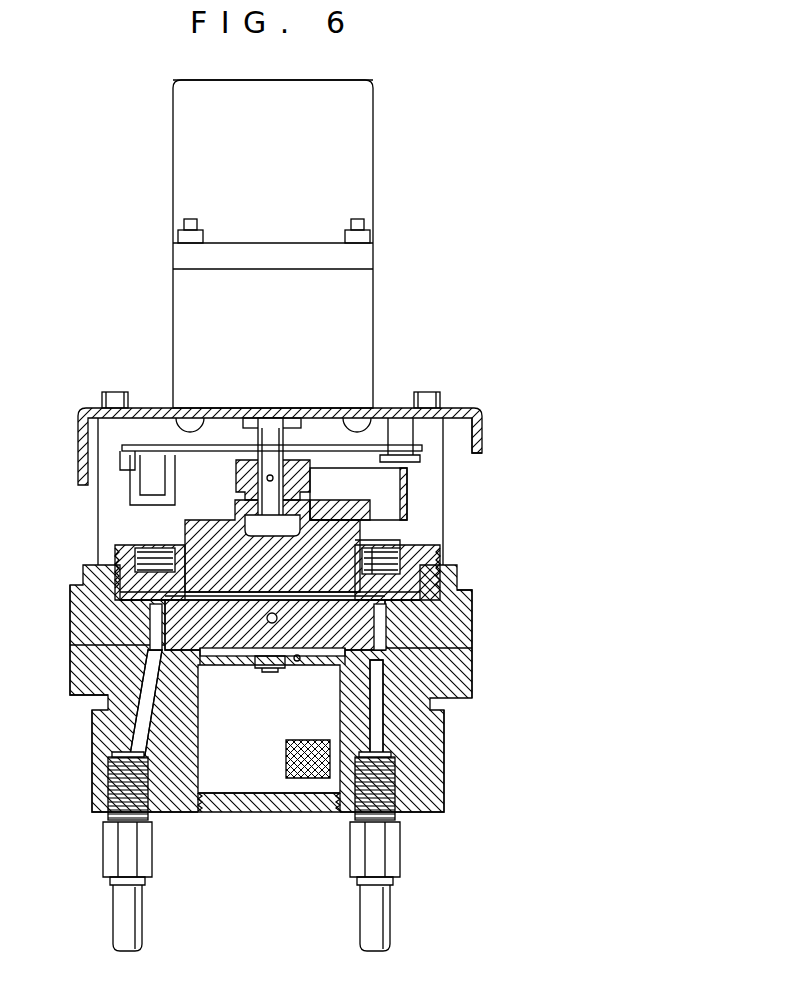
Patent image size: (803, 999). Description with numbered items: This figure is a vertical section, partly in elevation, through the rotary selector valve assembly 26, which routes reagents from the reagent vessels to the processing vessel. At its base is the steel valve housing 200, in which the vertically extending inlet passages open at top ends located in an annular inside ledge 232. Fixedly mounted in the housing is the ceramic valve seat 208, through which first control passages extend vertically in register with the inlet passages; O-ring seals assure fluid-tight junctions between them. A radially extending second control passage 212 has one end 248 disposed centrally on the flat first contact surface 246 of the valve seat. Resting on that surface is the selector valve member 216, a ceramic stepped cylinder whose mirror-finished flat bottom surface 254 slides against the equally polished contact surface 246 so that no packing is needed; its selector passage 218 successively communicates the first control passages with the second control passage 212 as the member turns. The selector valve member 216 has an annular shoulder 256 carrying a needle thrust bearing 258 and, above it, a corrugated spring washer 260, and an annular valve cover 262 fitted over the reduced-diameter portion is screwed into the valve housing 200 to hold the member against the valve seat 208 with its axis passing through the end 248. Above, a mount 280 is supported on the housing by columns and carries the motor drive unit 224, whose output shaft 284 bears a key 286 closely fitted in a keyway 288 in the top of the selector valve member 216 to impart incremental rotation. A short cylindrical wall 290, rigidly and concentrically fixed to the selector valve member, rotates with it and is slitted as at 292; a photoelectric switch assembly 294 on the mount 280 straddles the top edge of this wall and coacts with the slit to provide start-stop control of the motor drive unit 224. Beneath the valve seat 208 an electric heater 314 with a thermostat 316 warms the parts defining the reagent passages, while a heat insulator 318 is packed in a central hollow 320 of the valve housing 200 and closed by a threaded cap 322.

The rotary selector valve assembly 26 is at (453, 200).
The valve housing 200 is at (465, 608).
The valve seat 208 is at (420, 648).
The second control passage 212 is at (262, 657).
The selector valve member 216 is at (332, 514).
The selector passage 218 is at (322, 592).
The motor drive unit 224 is at (287, 311).
The annular inside ledge 232 is at (110, 655).
The first contact surface 246 is at (248, 592).
The end of the second control passage 248 is at (265, 612).
The flat bottom surface 254 is at (188, 598).
The annular shoulder 256 is at (130, 562).
The needle thrust bearing 258 is at (430, 566).
The corrugated spring washer 260 is at (398, 555).
The annular valve cover 262 is at (385, 540).
The mount 280 is at (393, 407).
The output shaft 284 is at (266, 425).
The key 286 is at (238, 505).
The keyway 288 is at (300, 515).
The cylindrical wall 290 is at (407, 497).
The slit 292 is at (407, 470).
The photoelectric switch assembly 294 is at (122, 470).
The electric heater 314 is at (296, 662).
The thermostat 316 is at (266, 673).
The heat insulator 318 is at (302, 780).
The hollow 320 is at (210, 805).
The threaded cap 322 is at (250, 812).